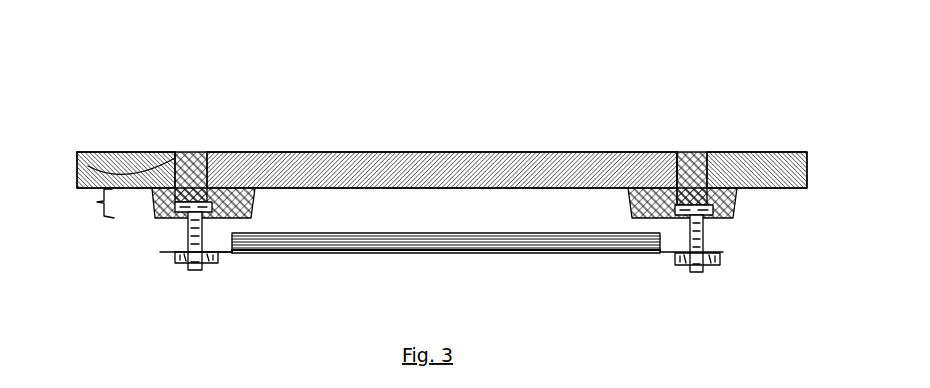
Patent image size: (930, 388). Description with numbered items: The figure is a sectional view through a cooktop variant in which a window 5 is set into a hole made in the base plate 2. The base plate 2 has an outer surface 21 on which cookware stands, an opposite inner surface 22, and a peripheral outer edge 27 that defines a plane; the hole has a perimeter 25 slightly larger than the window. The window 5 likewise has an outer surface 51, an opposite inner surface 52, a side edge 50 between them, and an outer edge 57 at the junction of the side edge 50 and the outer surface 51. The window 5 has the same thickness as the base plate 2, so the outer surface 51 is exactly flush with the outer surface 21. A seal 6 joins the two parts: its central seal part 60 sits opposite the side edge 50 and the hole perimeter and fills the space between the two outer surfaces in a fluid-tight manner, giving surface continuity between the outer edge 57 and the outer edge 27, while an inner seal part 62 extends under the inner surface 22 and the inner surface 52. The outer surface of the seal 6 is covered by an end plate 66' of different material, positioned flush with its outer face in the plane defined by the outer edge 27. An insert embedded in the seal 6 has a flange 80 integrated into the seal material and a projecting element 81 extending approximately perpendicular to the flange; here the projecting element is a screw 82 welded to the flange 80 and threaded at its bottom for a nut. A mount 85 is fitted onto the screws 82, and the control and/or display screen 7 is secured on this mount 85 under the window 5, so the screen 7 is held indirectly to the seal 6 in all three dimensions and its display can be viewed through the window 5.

The base plate 2 is at (138, 152).
The window 5 is at (555, 152).
The seal 6 is at (191, 101).
The control and/or display screen 7 is at (408, 238).
The outer surface of the base plate 21 is at (90, 152).
The inner surface of the base plate 22 is at (115, 152).
The perimeter of the hole 25 is at (103, 152).
The outer edge of the base plate 27 is at (707, 152).
The side edge of the window 50 is at (227, 152).
The outer surface of the window 51 is at (317, 152).
The inner surface of the window 52 is at (368, 152).
The outer edge of the window 57 is at (676, 152).
The central seal part 60 is at (152, 199).
The inner seal part 62 is at (397, 203).
The end plate 66' is at (700, 122).
The flange 80 is at (255, 216).
The projecting element 81 is at (152, 247).
The screw 82 is at (195, 270).
The mount 85 is at (235, 252).